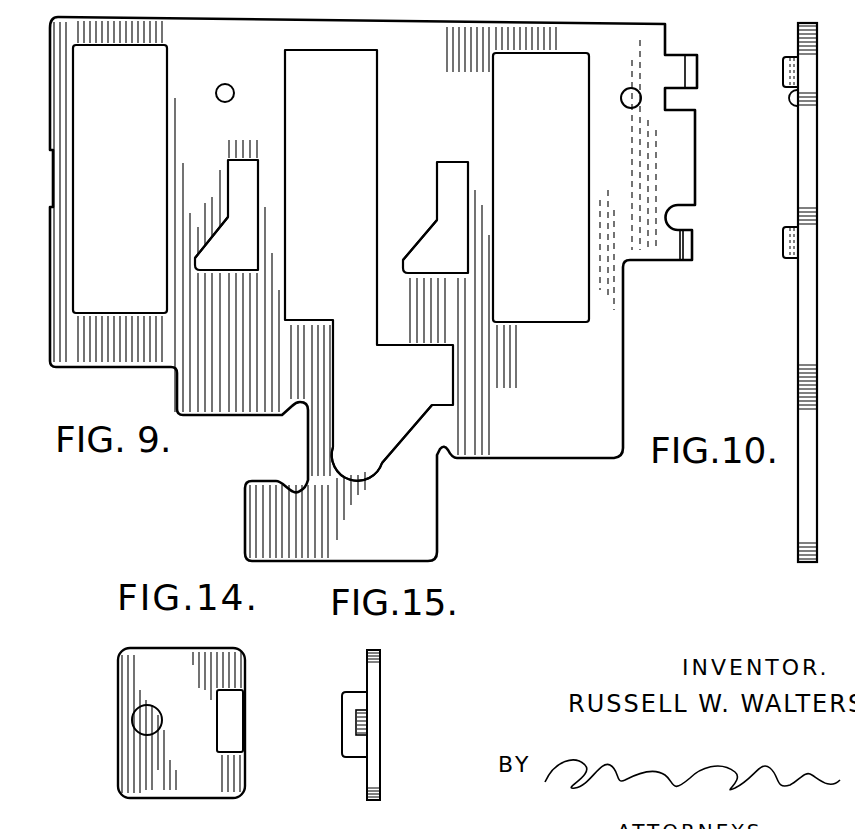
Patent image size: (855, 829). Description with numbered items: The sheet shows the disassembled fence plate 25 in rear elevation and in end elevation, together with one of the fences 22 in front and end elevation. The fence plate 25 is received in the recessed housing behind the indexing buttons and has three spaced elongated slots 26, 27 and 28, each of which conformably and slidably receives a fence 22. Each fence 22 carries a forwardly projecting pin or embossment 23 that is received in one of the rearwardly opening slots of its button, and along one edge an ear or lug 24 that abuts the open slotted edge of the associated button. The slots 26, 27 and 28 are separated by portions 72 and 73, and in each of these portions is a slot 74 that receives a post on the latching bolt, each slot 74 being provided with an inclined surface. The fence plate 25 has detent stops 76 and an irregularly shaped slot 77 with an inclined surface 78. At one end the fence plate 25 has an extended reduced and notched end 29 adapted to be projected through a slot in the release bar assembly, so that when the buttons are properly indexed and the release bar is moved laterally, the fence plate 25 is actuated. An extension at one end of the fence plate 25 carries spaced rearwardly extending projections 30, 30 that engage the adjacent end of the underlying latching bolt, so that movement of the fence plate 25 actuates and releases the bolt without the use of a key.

In FIG. 9, the fence plate 25 is at (668, 40).
In FIG. 10, the fence plate 25 is at (813, 170).
In FIG. 9, the elongated slot 26 is at (147, 153).
In FIG. 9, the elongated slot 27 is at (365, 155).
In FIG. 9, the elongated slot 28 is at (575, 157).
In FIG. 9, the extended reduced and notched end 29 is at (413, 541).
In FIG. 9, the rearwardly extending projection 30 is at (690, 72).
In FIG. 10, the rearwardly extending projection 30 is at (783, 72).
In FIG. 9, the portion 72 is at (270, 136).
In FIG. 9, the portion 73 is at (455, 151).
In FIG. 9, the slot 74 is at (235, 253).
In FIG. 9, the detent stop 76 is at (227, 87).
In FIG. 9, the irregularly shaped slot 77 is at (410, 402).
In FIG. 9, the inclined surface 78 is at (405, 438).
In FIG. 14, the fence 22 is at (245, 670).
In FIG. 15, the fence 22 is at (380, 687).
In FIG. 14, the pin or embossment 23 is at (137, 720).
In FIG. 15, the pin or embossment 23 is at (368, 722).
In FIG. 14, the ear or lug 24 is at (233, 722).
In FIG. 15, the ear or lug 24 is at (342, 713).